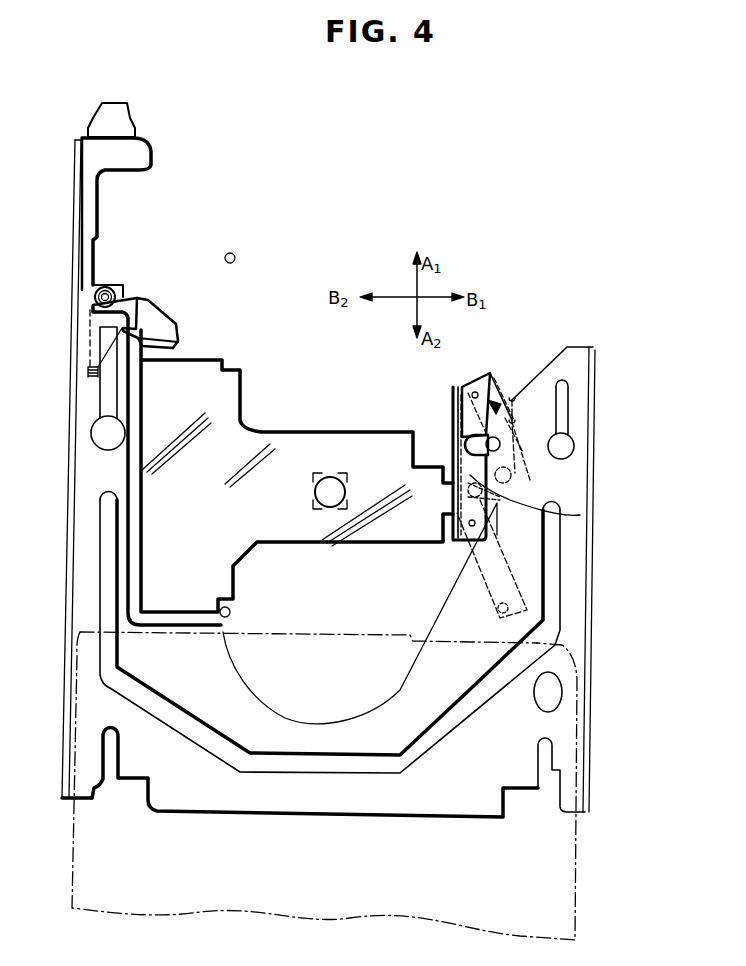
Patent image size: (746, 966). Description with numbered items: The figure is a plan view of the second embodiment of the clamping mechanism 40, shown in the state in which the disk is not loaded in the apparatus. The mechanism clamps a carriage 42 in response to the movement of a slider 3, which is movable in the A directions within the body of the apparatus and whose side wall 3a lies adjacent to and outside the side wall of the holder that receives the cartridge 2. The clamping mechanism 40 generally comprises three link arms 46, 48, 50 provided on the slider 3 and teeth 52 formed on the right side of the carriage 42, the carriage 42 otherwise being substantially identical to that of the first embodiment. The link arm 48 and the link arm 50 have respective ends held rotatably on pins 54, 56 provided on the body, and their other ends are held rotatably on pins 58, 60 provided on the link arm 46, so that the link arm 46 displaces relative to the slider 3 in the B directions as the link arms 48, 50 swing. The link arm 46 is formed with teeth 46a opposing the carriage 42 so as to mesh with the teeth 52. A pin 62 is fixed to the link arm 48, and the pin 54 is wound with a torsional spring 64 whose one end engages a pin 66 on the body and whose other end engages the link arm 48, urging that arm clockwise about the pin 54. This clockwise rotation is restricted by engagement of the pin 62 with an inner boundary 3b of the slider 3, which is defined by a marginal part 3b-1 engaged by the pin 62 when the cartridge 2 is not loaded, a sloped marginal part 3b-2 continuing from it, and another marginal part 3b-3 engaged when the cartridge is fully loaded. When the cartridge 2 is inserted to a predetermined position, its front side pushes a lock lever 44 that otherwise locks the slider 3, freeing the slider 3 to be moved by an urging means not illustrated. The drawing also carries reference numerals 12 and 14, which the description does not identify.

The cartridge 2 is at (525, 877).
The slider 3 is at (575, 504).
The side wall 3a is at (70, 580).
The inner boundary 3b is at (667, 378).
The marginal part 3b-1 is at (513, 474).
The sloped marginal part 3b-2 is at (513, 420).
The marginal part 3b-3 is at (513, 398).
The pin 12 is at (230, 609).
The pin 14 is at (233, 253).
The clamping mechanism 40 is at (448, 185).
The carriage 42 is at (288, 455).
The lock lever 44 is at (166, 322).
The link arm 46 is at (463, 422).
The teeth 46a is at (452, 386).
The link arm 48 is at (513, 397).
The link arm 50 is at (472, 558).
The teeth 52 is at (450, 508).
The pin 54 is at (512, 475).
The pin 56 is at (498, 613).
The pin 58 is at (472, 380).
The pin 60 is at (475, 523).
The pin 62 is at (470, 446).
The torsional spring 64 is at (503, 496).
The pin 66 is at (580, 515).